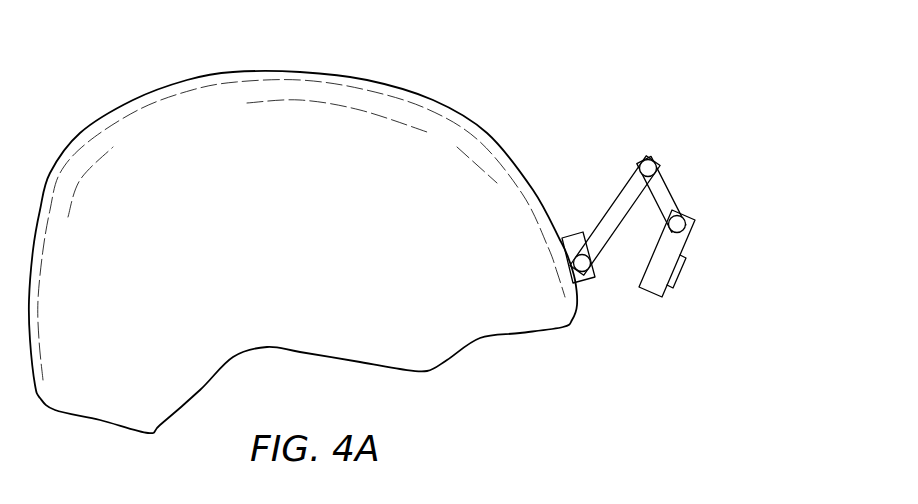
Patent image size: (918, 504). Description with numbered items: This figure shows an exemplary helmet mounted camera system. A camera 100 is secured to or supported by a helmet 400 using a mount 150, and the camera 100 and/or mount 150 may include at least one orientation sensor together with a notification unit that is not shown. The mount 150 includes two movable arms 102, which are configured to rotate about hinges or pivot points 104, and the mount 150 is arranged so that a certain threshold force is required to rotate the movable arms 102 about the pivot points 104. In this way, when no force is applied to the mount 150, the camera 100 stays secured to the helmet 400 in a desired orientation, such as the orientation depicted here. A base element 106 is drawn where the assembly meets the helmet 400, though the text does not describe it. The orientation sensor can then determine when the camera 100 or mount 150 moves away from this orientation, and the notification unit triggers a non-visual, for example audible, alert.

The helmet 400 is at (208, 110).
The camera 100 is at (653, 243).
The movable arms 102 is at (627, 200).
The pivot points 104 is at (643, 160).
The mount 106 is at (577, 240).
The mount 150 is at (616, 253).